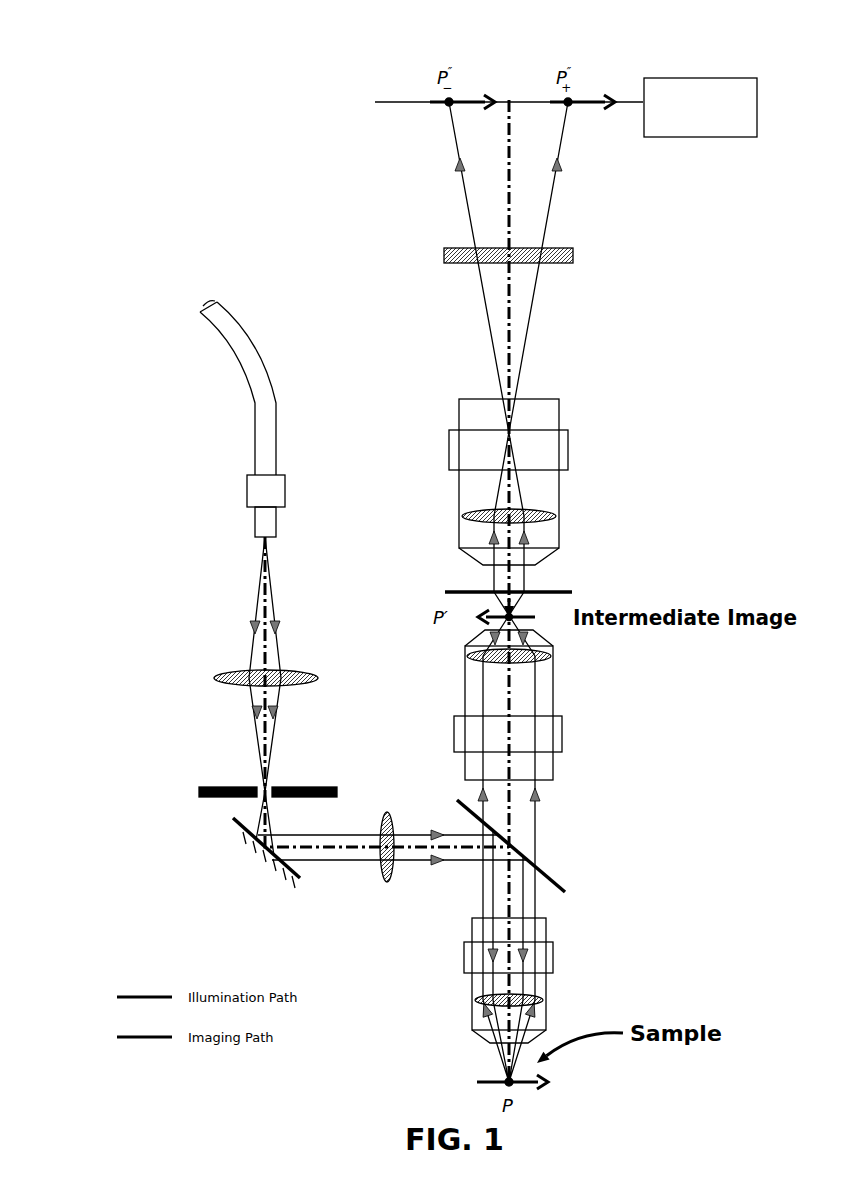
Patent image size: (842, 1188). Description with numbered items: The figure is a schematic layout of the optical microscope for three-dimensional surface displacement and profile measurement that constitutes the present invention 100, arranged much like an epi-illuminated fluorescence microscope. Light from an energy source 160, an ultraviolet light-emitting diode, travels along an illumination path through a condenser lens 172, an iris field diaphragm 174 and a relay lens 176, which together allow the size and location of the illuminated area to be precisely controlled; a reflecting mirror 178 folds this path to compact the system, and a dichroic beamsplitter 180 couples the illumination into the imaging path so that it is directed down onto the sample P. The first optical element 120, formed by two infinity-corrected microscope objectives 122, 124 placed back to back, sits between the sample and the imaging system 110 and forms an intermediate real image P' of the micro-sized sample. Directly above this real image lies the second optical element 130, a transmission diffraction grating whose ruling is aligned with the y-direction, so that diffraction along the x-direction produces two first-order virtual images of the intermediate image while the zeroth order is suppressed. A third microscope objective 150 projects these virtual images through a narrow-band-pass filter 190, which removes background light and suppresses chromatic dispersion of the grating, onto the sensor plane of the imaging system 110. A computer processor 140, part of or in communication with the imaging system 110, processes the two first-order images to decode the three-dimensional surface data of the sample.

The present invention 100 is at (230, 100).
The imaging system 110 is at (700, 107).
The computer processor 140 is at (700, 107).
The first optical element 120 is at (592, 836).
The infinity-corrected microscope objective 122 is at (553, 960).
The infinity-corrected microscope objective 124 is at (545, 735).
The second optical element 130 is at (555, 578).
The third microscope objective 150 is at (586, 421).
The energy source 160 is at (192, 278).
The condenser lens 172 is at (215, 678).
The iris field diaphragm 174 is at (198, 792).
The relay lens 176 is at (385, 883).
The reflecting mirror 178 is at (247, 833).
The dichroic beamsplitter 180 is at (536, 836).
The filter 190 is at (579, 234).